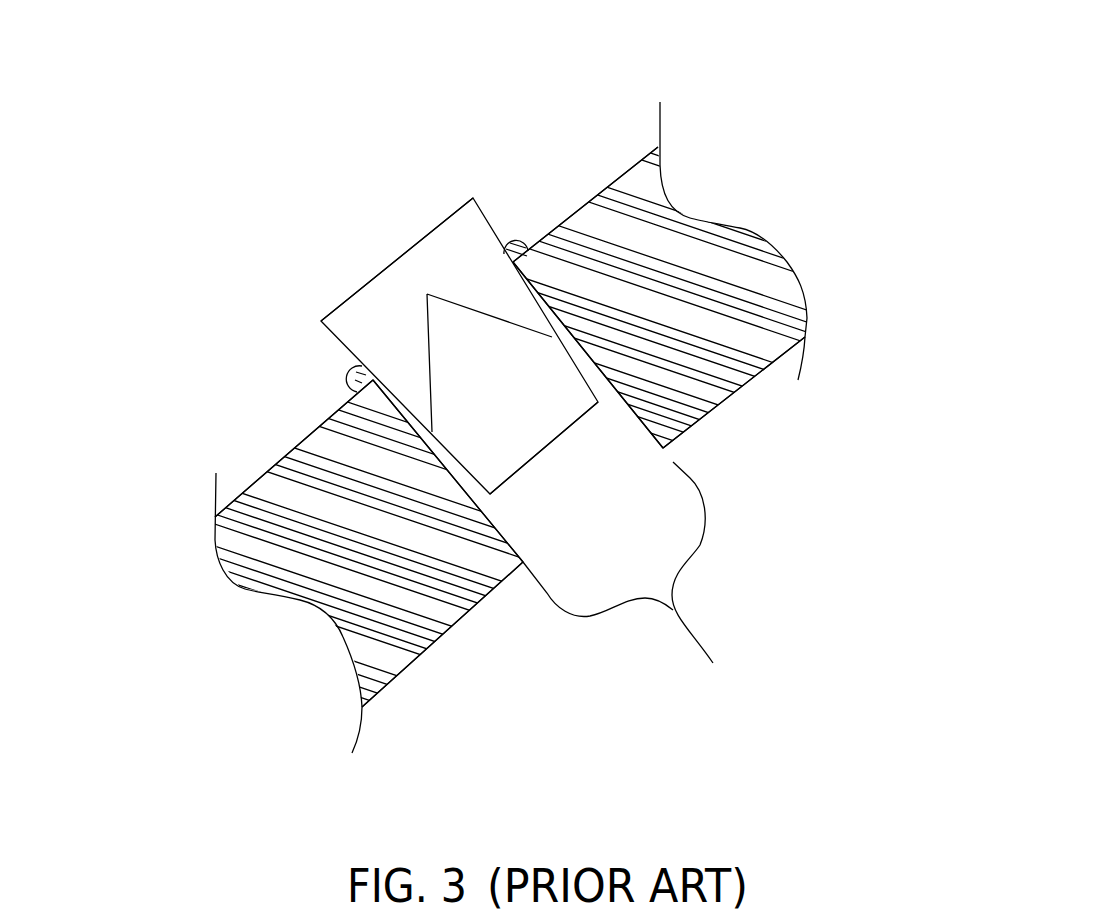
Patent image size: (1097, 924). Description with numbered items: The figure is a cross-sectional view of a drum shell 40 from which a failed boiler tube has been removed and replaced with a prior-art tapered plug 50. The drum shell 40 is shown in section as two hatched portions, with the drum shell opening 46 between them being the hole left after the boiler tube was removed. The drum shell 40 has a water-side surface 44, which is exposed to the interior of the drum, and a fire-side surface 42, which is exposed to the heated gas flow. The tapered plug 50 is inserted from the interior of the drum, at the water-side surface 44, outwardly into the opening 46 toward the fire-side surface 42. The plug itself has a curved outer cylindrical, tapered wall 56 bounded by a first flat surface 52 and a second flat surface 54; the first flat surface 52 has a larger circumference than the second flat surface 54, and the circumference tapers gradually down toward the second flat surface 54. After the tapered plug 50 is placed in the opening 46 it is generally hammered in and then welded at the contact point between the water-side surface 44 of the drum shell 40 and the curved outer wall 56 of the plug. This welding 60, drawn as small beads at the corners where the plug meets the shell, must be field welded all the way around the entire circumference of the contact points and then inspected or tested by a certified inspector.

The drum shell 40 is at (445, 583).
The fire-side surface 42 is at (747, 388).
The water-side surface 44 is at (585, 202).
The drum shell opening 46 is at (713, 663).
The tapered plug 50 is at (440, 248).
The first flat surface 52 is at (393, 258).
The second flat surface 54 is at (548, 450).
The curved outer cylindrical, tapered wall 56 is at (552, 337).
The welding 60 is at (513, 237).